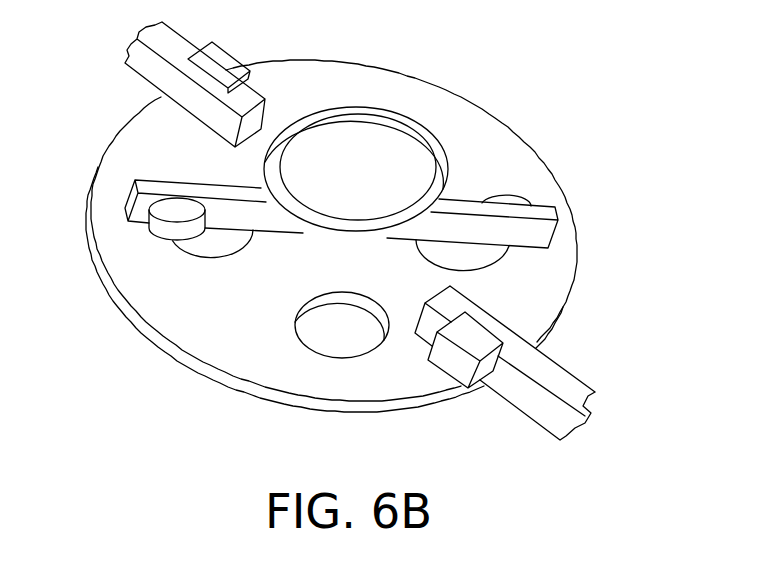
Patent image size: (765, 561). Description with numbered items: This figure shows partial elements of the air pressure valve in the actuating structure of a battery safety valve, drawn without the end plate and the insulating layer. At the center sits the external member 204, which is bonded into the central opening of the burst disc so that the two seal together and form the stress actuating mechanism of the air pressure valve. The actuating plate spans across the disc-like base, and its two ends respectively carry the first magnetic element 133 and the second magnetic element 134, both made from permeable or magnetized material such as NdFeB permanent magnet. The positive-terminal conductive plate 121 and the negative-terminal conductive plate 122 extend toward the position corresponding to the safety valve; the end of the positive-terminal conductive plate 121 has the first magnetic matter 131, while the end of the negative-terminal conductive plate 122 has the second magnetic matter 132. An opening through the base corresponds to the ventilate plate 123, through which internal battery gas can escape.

The positive-terminal conductive plate 121 is at (523, 397).
The negative-terminal conductive plate 122 is at (182, 48).
The ventilate plate 123 is at (360, 380).
The first magnetic matter 131 is at (453, 360).
The second magnetic matter 132 is at (227, 66).
The first magnetic element 133 is at (510, 197).
The second magnetic element 134 is at (168, 228).
The external member 204 is at (364, 143).